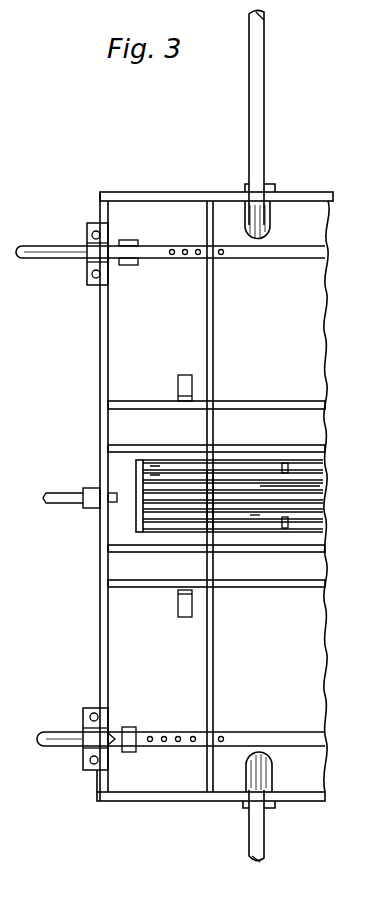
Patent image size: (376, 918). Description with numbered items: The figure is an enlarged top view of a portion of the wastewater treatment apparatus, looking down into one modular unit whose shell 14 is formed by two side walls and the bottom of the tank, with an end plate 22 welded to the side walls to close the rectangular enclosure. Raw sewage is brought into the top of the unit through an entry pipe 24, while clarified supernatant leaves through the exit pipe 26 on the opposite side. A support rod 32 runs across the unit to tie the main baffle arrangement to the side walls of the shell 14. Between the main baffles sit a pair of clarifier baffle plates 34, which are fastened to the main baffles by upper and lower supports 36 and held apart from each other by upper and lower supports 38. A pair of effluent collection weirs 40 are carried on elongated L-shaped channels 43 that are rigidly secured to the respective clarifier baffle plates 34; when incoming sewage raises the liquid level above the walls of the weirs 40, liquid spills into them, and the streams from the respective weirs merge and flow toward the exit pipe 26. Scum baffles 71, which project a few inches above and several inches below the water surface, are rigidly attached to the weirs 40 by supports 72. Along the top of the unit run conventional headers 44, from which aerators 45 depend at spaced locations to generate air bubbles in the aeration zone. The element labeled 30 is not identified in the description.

The shell 14 is at (134, 192).
The end plate 22 is at (100, 341).
The entry pipe 24 is at (258, 96).
The exit pipe 26 is at (67, 497).
The stop block 30 is at (178, 390).
The support rod 32 is at (213, 330).
The clarifier baffle plate 34 is at (110, 445).
The upper and lower supports 36 is at (207, 428).
The upper and lower supports 38 is at (208, 492).
The effluent collection weir 40 is at (227, 463).
The L-shaped channel 43 is at (262, 486).
The header 44 is at (158, 258).
The aerator 45 is at (223, 262).
The scum baffle 71 is at (155, 468).
The support 72 is at (290, 463).